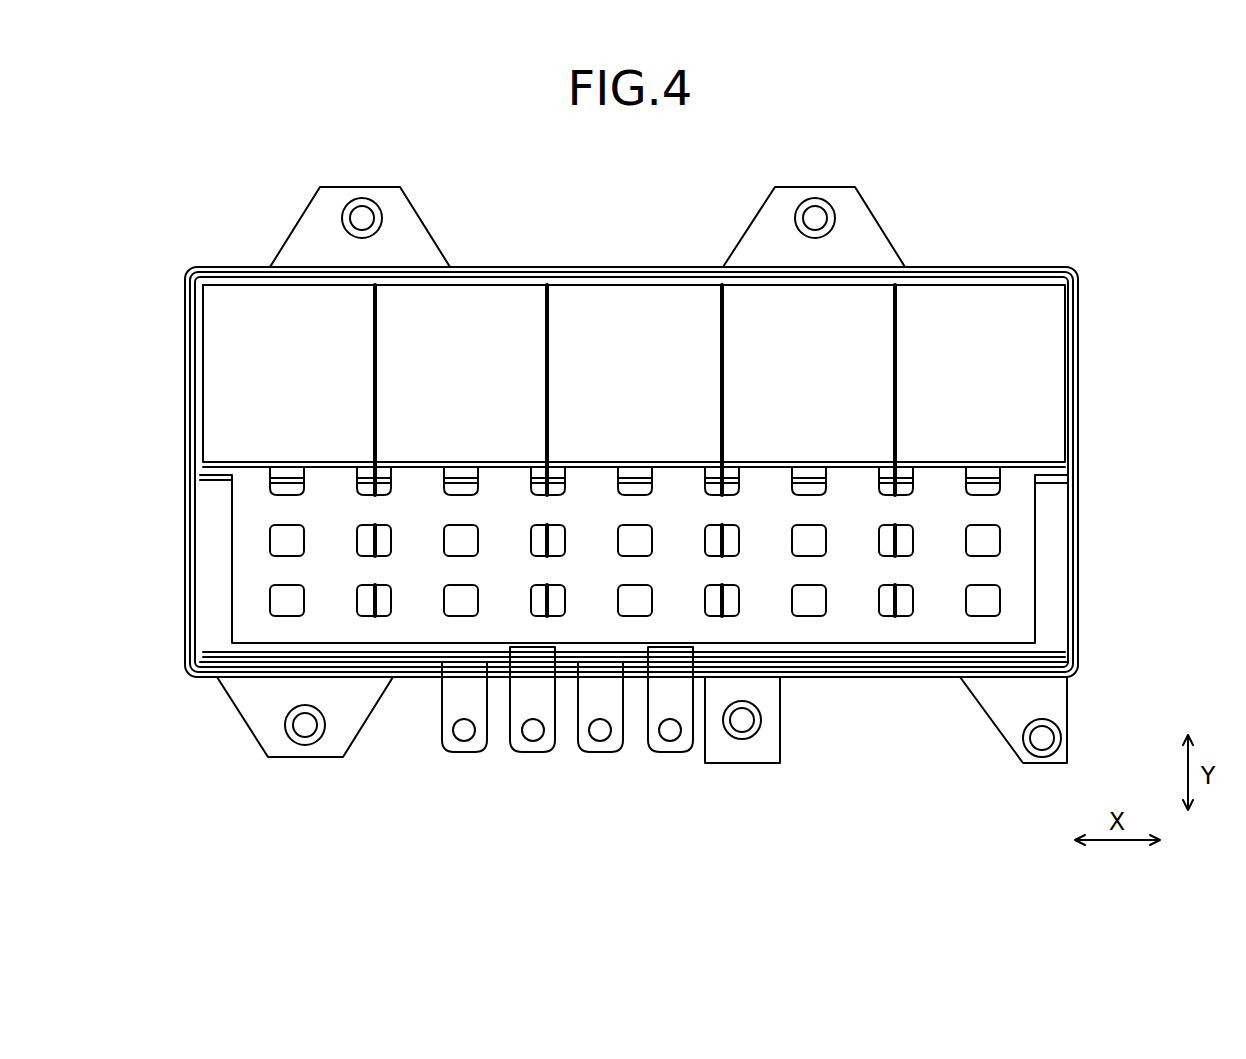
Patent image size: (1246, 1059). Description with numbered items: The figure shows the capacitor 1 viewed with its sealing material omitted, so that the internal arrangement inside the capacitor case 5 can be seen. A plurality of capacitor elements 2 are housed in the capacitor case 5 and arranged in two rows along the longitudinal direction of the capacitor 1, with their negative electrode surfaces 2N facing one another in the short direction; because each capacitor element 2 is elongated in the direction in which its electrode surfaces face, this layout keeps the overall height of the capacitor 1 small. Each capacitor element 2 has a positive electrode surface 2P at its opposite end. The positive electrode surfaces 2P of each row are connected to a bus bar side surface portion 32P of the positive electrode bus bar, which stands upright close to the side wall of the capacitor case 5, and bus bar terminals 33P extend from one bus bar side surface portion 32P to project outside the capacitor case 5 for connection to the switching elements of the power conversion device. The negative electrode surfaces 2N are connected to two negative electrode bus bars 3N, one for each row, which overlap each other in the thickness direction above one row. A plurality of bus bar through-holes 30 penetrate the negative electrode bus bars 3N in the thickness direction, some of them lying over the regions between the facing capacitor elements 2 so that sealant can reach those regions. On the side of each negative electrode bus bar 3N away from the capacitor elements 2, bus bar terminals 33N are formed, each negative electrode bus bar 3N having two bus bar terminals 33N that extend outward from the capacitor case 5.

The capacitor 1 is at (1045, 176).
The capacitor case 5 is at (1080, 352).
The capacitor element 2 is at (218, 388).
The positive electrode surface 2P is at (990, 285).
The negative electrode surface 2N is at (240, 478).
The bus bar side surface portion 32P is at (500, 285).
The negative electrode bus bar 3N is at (252, 577).
The bus bar through-hole 30 is at (285, 538).
The bus bar terminal 33P is at (464, 752).
The bus bar terminal 33N is at (533, 752).